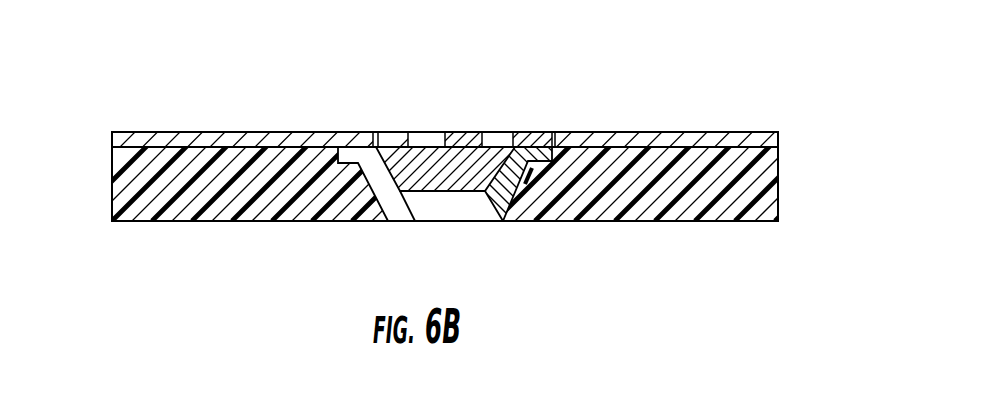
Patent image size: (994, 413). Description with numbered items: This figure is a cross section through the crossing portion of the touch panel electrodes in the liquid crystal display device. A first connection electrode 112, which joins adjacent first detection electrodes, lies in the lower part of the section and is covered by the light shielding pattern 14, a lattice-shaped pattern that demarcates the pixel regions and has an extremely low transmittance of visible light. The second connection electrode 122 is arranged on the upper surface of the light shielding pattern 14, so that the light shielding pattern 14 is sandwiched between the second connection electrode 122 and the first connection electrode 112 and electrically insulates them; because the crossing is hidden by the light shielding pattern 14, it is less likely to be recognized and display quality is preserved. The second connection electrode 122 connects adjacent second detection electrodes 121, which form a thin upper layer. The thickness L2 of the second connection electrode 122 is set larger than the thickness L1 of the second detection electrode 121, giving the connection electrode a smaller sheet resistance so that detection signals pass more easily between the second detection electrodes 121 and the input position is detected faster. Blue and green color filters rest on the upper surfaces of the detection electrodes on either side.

The second detection electrode 121 is at (288, 140).
The first connection electrode 112 is at (429, 133).
The light shielding pattern 14 is at (500, 151).
The second connection electrode 122 is at (450, 207).
The thickness of the second detection electrode L1 is at (172, 148).
The thickness of the second connection electrode L2 is at (429, 160).